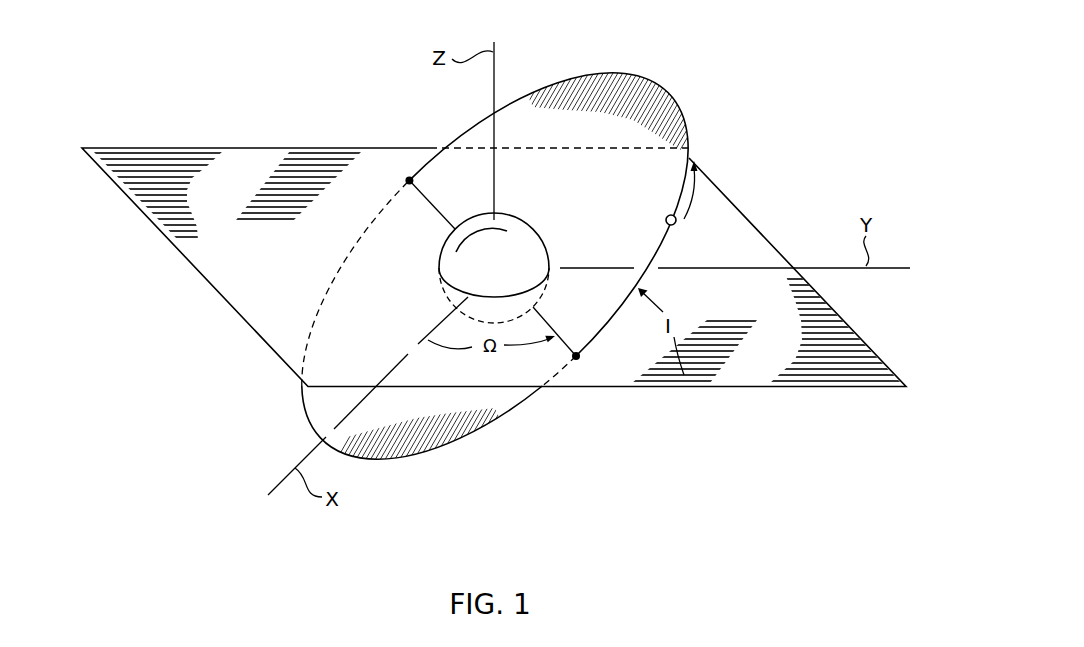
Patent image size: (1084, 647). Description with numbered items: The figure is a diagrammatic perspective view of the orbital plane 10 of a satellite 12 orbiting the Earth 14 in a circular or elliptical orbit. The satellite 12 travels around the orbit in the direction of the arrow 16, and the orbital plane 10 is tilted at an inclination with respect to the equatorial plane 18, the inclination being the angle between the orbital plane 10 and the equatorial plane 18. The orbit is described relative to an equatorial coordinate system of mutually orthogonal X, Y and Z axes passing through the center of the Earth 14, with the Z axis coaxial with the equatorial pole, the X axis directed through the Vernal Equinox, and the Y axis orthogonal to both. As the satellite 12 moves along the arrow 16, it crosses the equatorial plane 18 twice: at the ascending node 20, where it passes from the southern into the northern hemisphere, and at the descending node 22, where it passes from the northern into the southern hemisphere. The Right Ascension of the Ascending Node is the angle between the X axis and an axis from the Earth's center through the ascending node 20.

The orbital plane 10 is at (632, 92).
The satellite 12 is at (665, 220).
The Earth 14 is at (452, 240).
The arrow 16 is at (693, 197).
The equatorial plane 18 is at (150, 158).
The ascending node 20 is at (576, 352).
The descending node 22 is at (408, 178).